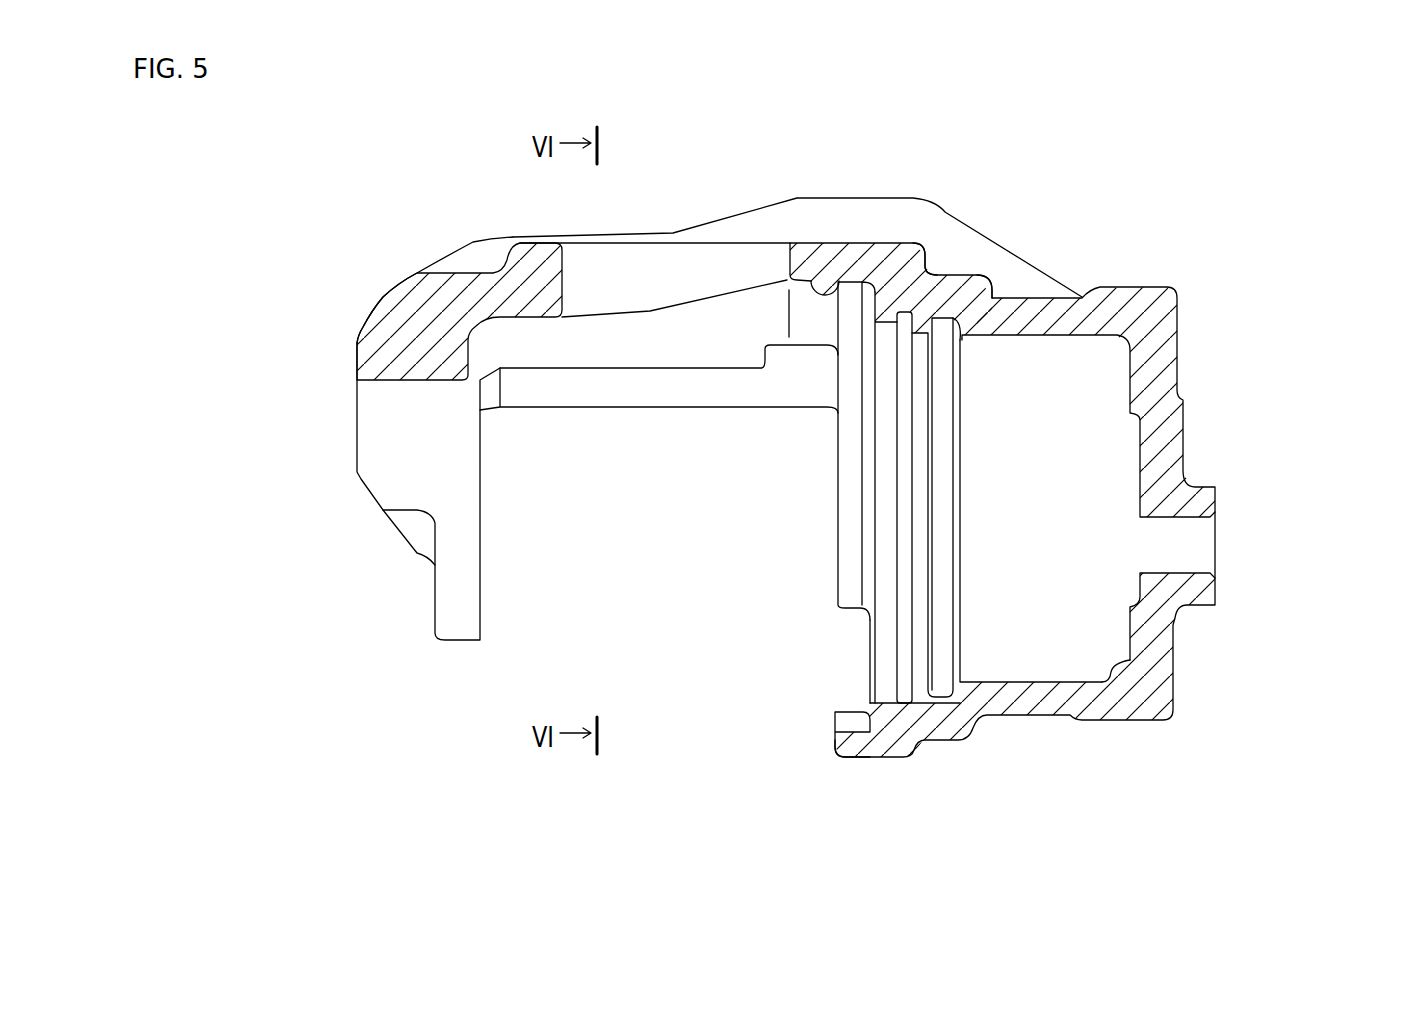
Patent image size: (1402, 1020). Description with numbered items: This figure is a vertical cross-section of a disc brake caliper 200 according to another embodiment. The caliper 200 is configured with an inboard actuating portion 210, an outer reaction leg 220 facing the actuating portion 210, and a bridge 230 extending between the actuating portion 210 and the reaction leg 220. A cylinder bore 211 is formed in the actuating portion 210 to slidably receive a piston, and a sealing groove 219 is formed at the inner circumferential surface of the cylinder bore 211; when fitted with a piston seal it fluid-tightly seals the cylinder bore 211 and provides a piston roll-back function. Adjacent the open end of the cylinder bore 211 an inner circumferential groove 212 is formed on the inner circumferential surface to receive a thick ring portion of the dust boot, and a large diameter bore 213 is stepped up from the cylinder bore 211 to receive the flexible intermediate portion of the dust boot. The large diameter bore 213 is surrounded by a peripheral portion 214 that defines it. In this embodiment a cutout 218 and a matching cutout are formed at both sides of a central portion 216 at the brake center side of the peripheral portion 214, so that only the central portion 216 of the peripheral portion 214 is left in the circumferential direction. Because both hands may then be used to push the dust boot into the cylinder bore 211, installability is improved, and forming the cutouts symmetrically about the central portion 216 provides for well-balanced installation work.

The caliper 200 is at (1232, 441).
The actuating portion 210 is at (994, 489).
The cylinder bore 211 is at (1107, 681).
The inner circumferential groove 212 is at (927, 287).
The large diameter bore 213 is at (857, 288).
The peripheral portion 214 is at (810, 280).
The central portion 216 is at (832, 748).
The cutout 218 is at (847, 678).
The sealing groove 219 is at (993, 297).
The reaction leg 220 is at (357, 447).
The bridge 230 is at (652, 232).